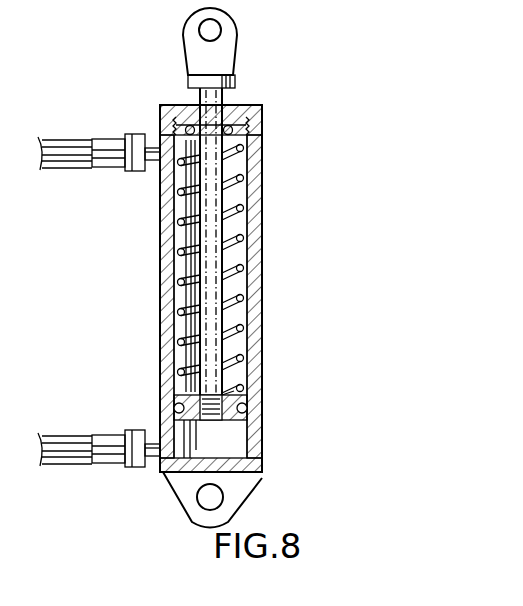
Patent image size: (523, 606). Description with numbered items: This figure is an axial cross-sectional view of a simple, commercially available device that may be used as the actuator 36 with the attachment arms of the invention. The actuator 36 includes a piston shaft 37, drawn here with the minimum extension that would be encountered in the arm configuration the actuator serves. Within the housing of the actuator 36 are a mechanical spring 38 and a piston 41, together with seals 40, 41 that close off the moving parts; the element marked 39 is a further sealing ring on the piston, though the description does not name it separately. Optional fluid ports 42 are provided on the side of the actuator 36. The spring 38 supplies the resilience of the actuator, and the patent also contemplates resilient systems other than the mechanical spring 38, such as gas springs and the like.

The actuator 36 is at (162, 250).
The piston shaft 37 is at (232, 96).
The spring 38 is at (242, 222).
The piston seal ring 39 is at (247, 412).
The seal 40 is at (195, 124).
The piston 41 is at (218, 422).
The fluid ports 42 is at (112, 139).